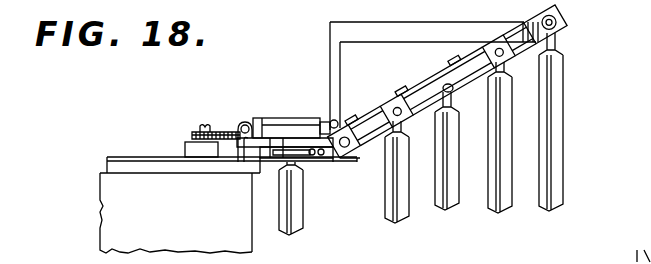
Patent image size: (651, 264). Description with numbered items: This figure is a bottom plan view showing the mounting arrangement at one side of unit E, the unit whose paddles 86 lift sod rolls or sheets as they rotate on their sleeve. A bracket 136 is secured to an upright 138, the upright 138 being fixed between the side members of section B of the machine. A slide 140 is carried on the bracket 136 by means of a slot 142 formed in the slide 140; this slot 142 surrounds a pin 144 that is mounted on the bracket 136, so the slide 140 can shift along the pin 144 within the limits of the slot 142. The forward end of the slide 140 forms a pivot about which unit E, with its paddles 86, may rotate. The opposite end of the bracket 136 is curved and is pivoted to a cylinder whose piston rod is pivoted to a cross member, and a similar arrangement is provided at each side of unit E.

The paddles 86 is at (297, 227).
The bracket 136 is at (247, 160).
The upright 138 is at (278, 128).
The slide 140 is at (267, 163).
The slot 142 is at (316, 160).
The pin 144 is at (307, 125).